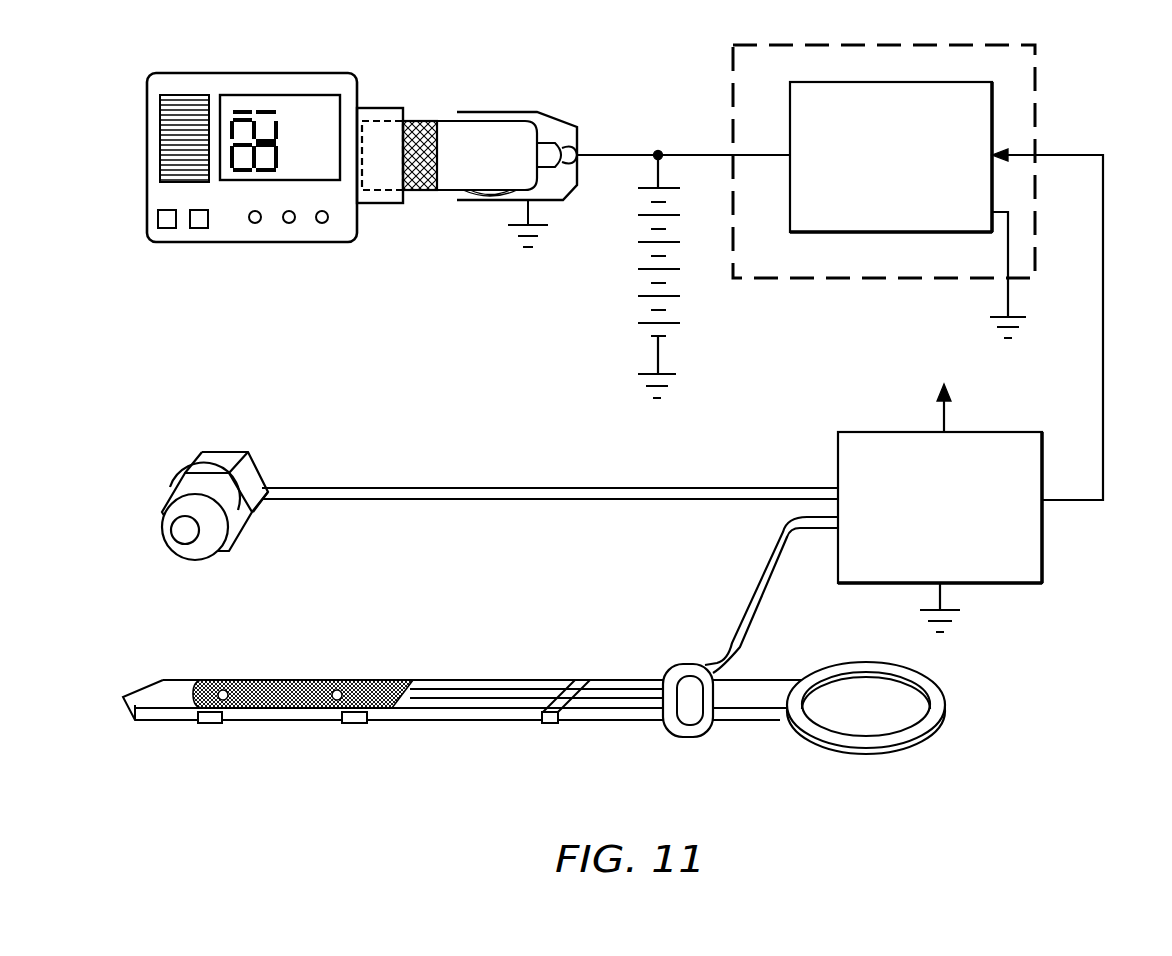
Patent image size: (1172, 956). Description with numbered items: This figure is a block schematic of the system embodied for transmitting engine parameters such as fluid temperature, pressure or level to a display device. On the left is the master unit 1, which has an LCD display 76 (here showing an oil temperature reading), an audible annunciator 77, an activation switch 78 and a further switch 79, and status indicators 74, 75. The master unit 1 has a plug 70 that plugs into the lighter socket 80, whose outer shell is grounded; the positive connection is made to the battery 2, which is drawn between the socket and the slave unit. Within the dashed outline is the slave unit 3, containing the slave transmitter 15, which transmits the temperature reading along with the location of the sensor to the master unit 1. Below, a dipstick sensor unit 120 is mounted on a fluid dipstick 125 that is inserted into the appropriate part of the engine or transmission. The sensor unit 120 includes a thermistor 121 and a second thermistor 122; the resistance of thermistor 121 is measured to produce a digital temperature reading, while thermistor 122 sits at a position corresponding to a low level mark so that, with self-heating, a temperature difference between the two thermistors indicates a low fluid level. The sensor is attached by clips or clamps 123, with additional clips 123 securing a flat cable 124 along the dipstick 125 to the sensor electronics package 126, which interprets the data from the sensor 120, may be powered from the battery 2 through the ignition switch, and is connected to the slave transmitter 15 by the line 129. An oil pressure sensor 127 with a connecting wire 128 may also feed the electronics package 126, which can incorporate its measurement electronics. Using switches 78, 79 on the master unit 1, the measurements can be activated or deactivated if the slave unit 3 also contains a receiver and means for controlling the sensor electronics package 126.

The master unit 1 is at (239, 213).
The battery 2 is at (645, 243).
The slave unit 3 is at (731, 93).
The slave transmitter 15 is at (812, 82).
The plug 70 is at (412, 120).
The status indicator 74 is at (289, 223).
The status indicator 75 is at (253, 223).
The LCD display 76 is at (275, 94).
The audible annunciator 77 is at (163, 158).
The activation switch 78 is at (200, 228).
The switch 79 is at (167, 228).
The lighter socket 80 is at (557, 115).
The dipstick sensor unit 120 is at (303, 652).
The thermistor 121 is at (245, 680).
The second thermistor 122 is at (358, 680).
The clips 123 is at (355, 725).
The flat cable 124 is at (723, 645).
The fluid dipstick 125 is at (777, 678).
The sensor electronics package 126 is at (868, 432).
The oil pressure sensor 127 is at (173, 485).
The connecting wire 128 is at (487, 488).
The wire 129 is at (1104, 350).